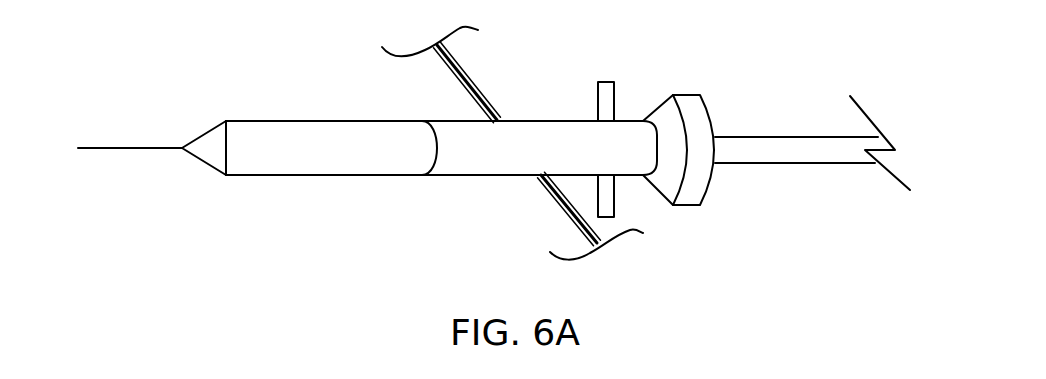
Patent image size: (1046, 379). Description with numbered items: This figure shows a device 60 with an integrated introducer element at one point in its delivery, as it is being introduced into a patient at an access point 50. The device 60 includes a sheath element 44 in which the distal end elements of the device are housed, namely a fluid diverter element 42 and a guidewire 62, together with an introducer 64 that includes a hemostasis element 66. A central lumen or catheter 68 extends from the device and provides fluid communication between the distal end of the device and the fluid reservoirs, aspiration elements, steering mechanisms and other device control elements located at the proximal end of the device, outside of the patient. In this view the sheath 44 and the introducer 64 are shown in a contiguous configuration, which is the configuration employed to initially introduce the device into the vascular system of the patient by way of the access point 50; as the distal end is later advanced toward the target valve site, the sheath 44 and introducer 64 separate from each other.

The fluid diverter element 42 is at (212, 160).
The sheath element 44 is at (333, 159).
The access point 50 is at (510, 117).
The device 60 is at (462, 205).
The guidewire 62 is at (138, 150).
The introducer 64 is at (535, 160).
The hemostasis element 66 is at (620, 115).
The central lumen or catheter 68 is at (782, 152).